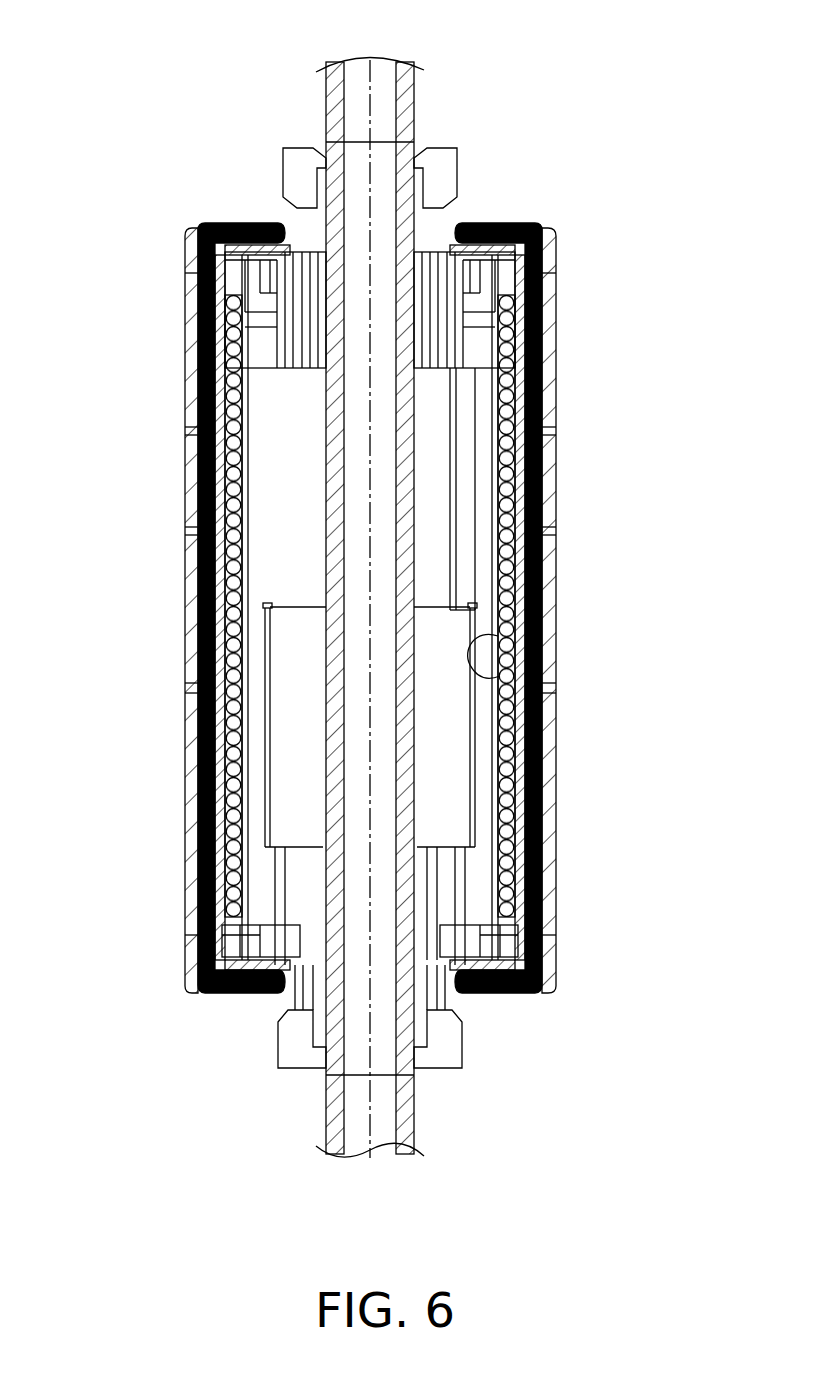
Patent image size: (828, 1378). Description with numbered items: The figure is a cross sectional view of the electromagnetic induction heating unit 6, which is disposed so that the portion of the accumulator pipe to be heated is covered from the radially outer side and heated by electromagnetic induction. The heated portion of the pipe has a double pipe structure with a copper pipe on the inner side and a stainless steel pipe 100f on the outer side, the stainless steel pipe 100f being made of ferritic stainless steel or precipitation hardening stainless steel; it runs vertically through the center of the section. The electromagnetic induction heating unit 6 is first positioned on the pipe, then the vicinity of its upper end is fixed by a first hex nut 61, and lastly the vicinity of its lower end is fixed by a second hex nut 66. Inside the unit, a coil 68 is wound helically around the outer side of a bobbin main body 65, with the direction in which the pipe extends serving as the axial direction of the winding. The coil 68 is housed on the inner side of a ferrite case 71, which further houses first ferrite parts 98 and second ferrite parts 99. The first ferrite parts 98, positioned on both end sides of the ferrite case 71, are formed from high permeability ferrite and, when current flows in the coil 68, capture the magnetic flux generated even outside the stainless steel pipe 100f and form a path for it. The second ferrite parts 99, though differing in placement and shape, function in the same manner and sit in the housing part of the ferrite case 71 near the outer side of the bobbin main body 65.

The electromagnetic induction heating unit 6 is at (222, 98).
The stainless steel pipe 100f is at (327, 142).
The first hex nut 61 is at (283, 167).
The second hex nut 66 is at (280, 1047).
The ferrite case 71 is at (188, 310).
The second ferrite parts 99 is at (187, 571).
The first ferrite parts 98 is at (240, 225).
The coil 68 is at (553, 455).
The bobbin main body 65 is at (543, 657).